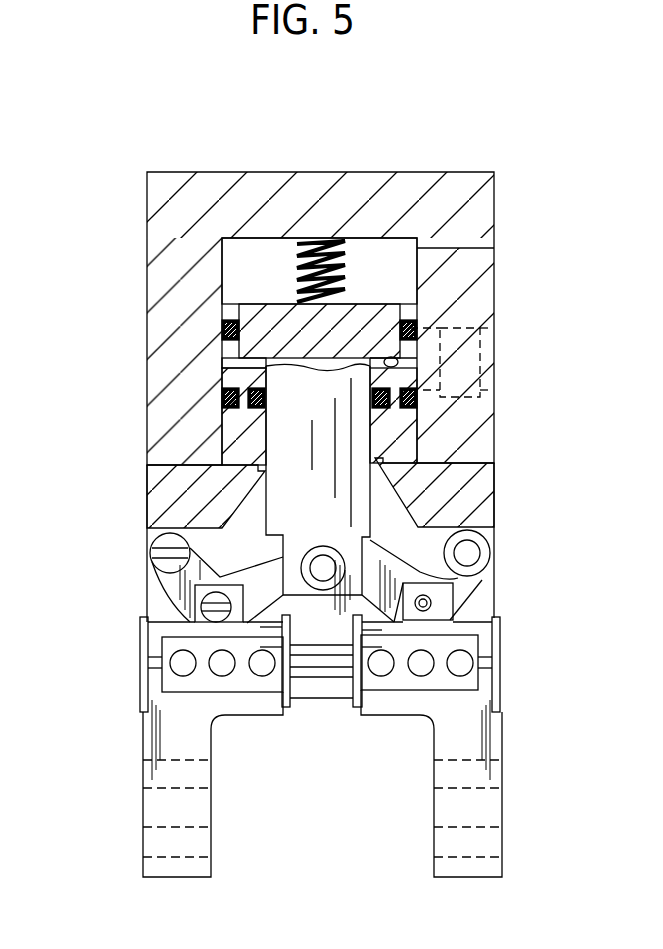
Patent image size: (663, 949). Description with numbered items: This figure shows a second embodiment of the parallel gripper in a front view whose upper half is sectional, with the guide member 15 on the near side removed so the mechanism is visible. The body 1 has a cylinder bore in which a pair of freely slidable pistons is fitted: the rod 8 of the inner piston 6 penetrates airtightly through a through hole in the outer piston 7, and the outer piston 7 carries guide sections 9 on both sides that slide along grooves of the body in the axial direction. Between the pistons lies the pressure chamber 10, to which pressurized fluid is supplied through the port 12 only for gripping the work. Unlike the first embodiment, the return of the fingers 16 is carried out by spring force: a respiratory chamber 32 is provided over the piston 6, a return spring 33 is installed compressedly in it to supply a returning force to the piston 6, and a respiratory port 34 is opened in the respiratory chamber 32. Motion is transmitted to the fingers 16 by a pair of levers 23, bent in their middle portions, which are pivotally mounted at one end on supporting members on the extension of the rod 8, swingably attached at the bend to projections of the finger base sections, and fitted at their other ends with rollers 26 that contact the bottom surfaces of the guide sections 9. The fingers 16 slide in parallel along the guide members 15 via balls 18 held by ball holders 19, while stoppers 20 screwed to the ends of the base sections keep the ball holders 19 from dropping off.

The body 1 is at (219, 178).
The return spring 33 is at (300, 240).
The respiratory port 34 is at (485, 240).
The respiratory chamber 32 is at (232, 271).
The inner piston 6 is at (250, 312).
The pressure chamber 10 is at (240, 360).
The outer piston 7 is at (235, 425).
The guide section 9 is at (172, 478).
The rod 8 is at (280, 497).
The roller 26 is at (155, 548).
The lever 23 is at (172, 580).
The ball 18 is at (185, 663).
The ball holder 19 is at (175, 682).
The port 12 is at (460, 385).
The stopper 20 is at (500, 660).
The guide member 15 is at (318, 702).
The finger 16 is at (205, 806).